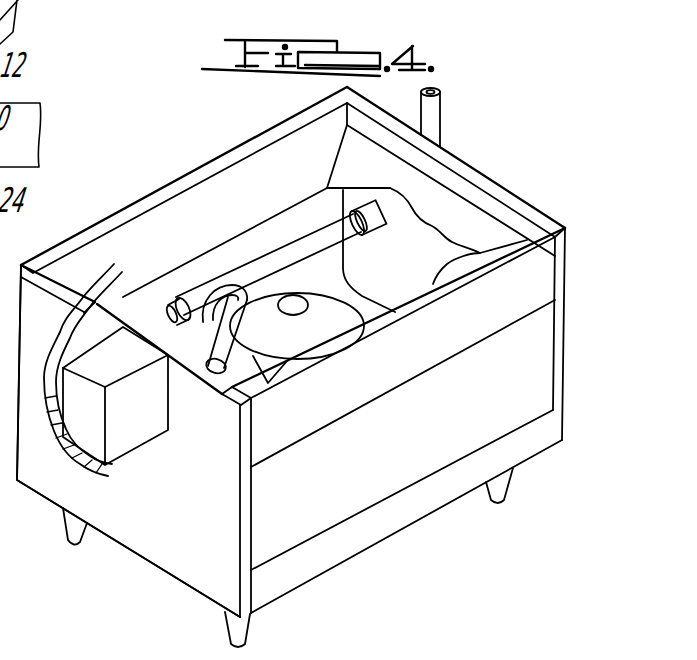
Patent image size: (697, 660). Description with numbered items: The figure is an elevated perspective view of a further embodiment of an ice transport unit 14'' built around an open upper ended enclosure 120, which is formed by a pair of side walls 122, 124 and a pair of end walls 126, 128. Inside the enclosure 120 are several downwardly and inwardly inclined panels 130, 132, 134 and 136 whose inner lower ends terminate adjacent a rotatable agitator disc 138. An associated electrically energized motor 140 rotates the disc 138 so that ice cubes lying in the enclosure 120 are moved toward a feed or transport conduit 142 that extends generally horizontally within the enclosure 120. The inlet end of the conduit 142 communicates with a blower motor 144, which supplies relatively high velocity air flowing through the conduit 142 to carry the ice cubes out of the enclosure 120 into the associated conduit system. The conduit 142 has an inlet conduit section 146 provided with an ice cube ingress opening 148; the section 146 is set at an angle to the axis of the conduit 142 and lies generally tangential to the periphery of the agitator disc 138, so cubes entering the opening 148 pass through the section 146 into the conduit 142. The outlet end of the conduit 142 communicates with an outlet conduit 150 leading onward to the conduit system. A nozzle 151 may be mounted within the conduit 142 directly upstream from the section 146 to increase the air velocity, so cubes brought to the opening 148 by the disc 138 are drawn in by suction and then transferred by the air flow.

The transport unit 14'' is at (128, 351).
The enclosure 120 is at (381, 542).
The side wall 122 is at (420, 354).
The side wall 124 is at (220, 173).
The end wall 126 is at (483, 197).
The end wall 128 is at (196, 500).
The inclined panel 130 is at (387, 177).
The inclined panel 132 is at (305, 192).
The inclined panel 134 is at (103, 293).
The inclined panel 136 is at (457, 268).
The rotatable agitator disc 138 is at (331, 339).
The electrically energized motor 140 is at (270, 387).
The feed or transport conduit 142 is at (269, 256).
The blower motor 144 is at (158, 409).
The inlet conduit section 146 is at (210, 355).
The ice cube ingress opening 148 is at (232, 296).
The outlet conduit 150 is at (437, 117).
The nozzle 151 is at (180, 300).